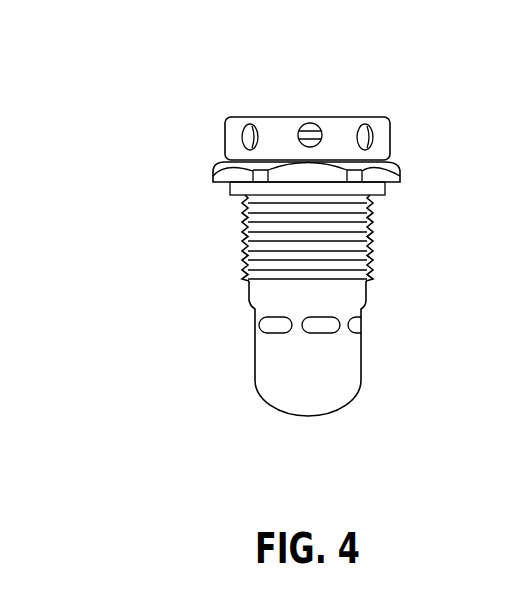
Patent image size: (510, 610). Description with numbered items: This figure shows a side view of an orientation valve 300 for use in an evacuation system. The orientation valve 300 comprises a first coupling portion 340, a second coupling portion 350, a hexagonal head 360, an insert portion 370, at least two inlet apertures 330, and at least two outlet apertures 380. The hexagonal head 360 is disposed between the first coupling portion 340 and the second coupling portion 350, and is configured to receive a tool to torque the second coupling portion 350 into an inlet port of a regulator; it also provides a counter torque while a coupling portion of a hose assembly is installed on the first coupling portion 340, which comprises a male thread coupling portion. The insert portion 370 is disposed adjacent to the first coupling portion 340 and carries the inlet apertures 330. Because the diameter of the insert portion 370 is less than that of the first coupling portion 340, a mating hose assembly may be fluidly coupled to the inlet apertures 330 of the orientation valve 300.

The orientation valve 300 is at (128, 128).
The inlet apertures 330 is at (262, 324).
The first coupling portion 340 is at (343, 245).
The second coupling portion 350 is at (343, 135).
The hexagonal head 360 is at (380, 173).
The insert portion 370 is at (334, 376).
The outlet apertures 380 is at (256, 136).